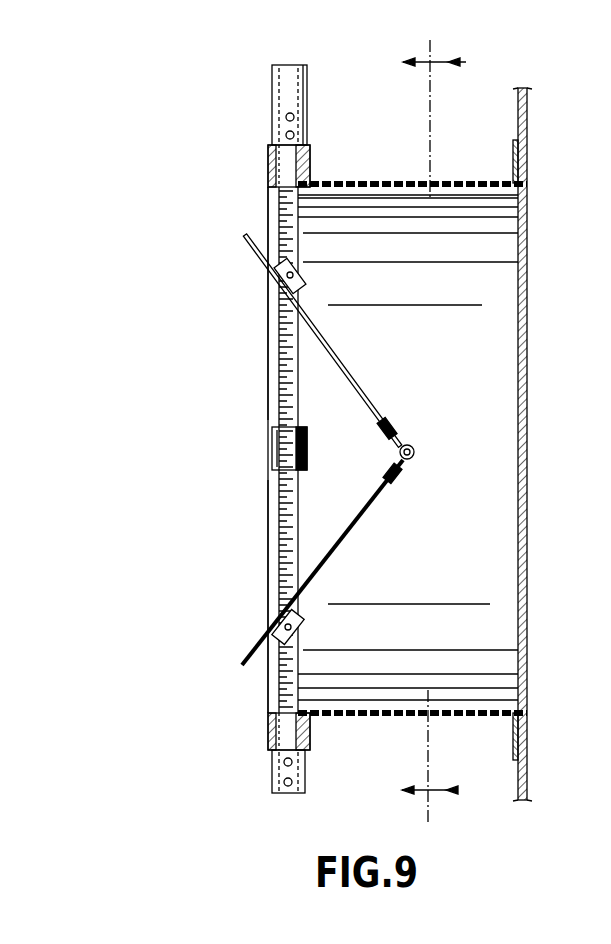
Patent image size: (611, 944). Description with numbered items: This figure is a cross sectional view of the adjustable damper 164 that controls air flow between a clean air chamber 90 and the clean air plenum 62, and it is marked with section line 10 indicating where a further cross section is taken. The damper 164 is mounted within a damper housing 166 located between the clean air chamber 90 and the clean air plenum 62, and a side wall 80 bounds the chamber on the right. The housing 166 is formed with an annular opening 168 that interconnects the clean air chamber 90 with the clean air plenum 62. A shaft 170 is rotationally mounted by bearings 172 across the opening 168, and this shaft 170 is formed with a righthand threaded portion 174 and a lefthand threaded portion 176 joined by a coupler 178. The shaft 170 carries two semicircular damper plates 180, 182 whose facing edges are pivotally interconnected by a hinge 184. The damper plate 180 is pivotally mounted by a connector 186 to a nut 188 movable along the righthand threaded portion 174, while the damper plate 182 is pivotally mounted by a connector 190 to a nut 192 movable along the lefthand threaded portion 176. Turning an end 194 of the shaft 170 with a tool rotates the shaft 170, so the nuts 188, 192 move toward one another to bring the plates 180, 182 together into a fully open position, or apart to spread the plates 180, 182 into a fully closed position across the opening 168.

The section line 10- 10 is at (446, 439).
The clean air plenum 62 is at (140, 416).
The side wall 80 is at (530, 97).
The clean air chamber 90 is at (578, 429).
The adjustable damper 164 is at (228, 735).
The damper housing 166 is at (360, 728).
The annular opening 168 is at (468, 683).
The shaft 170 is at (276, 390).
The bearings 172 is at (312, 170).
The righthand threaded portion 174 is at (275, 313).
The lefthand threaded portion 176 is at (282, 588).
The coupler 178 is at (285, 453).
The damper plate 180 is at (352, 366).
The damper plate 182 is at (357, 527).
The hinge 184 is at (415, 448).
The connector 186 is at (305, 286).
The nut 188 is at (305, 268).
The connector 190 is at (302, 612).
The nut 192 is at (302, 623).
The end of shaft 194 is at (275, 66).